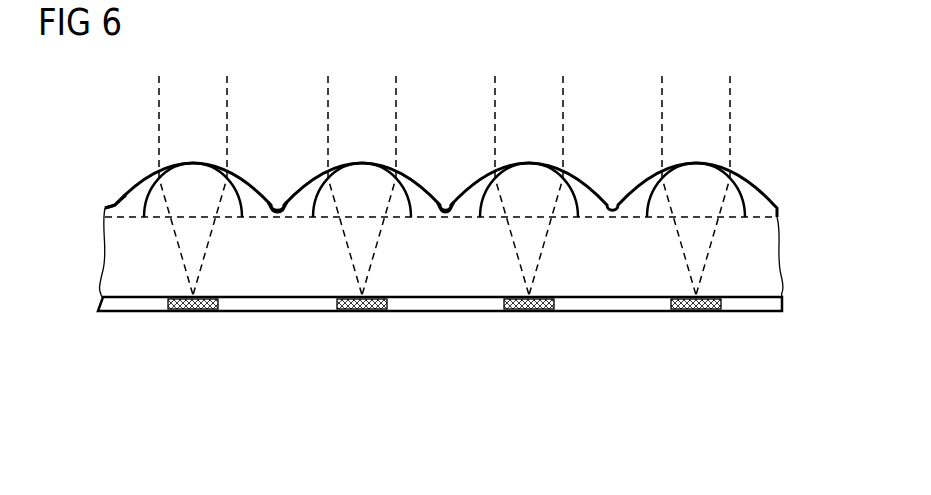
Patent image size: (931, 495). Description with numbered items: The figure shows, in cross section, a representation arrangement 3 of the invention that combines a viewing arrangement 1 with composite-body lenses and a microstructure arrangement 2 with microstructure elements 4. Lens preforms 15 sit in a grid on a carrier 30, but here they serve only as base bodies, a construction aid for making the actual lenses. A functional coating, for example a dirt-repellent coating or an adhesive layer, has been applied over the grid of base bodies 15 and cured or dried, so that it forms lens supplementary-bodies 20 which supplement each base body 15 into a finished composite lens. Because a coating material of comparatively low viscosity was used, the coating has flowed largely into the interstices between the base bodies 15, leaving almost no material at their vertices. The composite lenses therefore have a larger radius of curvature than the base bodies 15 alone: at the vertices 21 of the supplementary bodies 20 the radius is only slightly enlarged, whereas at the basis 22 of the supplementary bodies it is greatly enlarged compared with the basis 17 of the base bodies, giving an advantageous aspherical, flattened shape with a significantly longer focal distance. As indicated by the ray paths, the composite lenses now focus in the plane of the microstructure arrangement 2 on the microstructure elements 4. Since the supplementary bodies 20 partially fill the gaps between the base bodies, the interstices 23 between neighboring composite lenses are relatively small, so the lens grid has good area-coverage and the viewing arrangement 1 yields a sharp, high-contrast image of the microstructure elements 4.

The viewing arrangement 1 is at (67, 165).
The microstructure arrangement 2 is at (772, 302).
The representation arrangement 3 is at (78, 106).
The microstructure elements 4 is at (199, 313).
The lens preforms 15 is at (691, 178).
The basis of the base bodies 17 is at (581, 205).
The lens supplementary-bodies 20 is at (748, 188).
The vertices of the supplementary bodies 21 is at (194, 164).
The basis of the supplementary bodies 22 is at (116, 200).
The interstices between neighboring composite lenses 23 is at (445, 186).
The carrier 30 is at (768, 247).